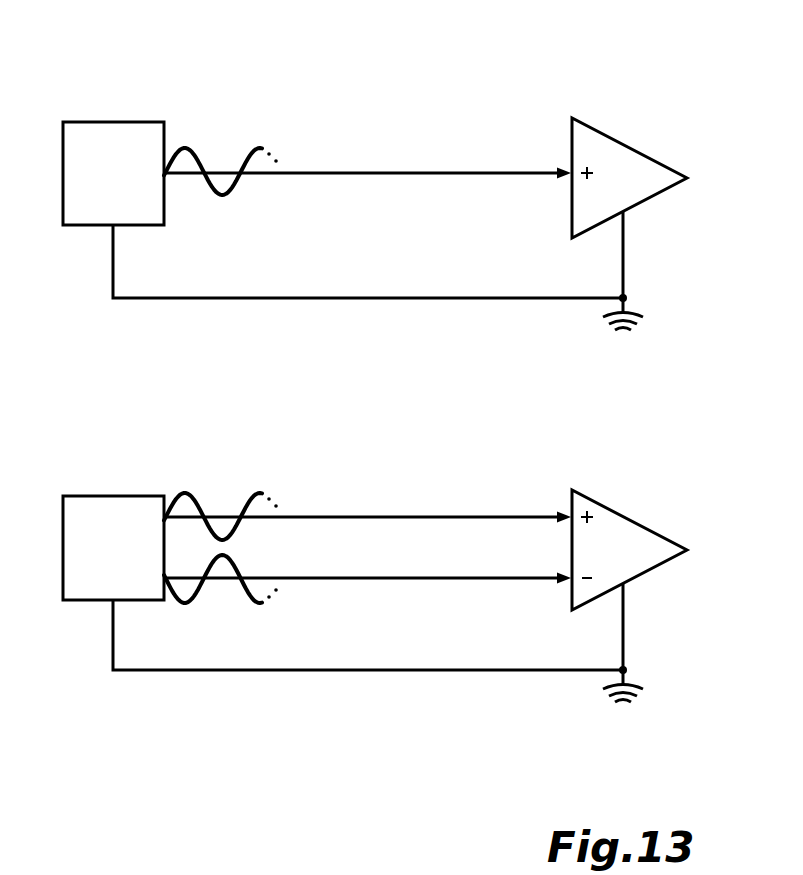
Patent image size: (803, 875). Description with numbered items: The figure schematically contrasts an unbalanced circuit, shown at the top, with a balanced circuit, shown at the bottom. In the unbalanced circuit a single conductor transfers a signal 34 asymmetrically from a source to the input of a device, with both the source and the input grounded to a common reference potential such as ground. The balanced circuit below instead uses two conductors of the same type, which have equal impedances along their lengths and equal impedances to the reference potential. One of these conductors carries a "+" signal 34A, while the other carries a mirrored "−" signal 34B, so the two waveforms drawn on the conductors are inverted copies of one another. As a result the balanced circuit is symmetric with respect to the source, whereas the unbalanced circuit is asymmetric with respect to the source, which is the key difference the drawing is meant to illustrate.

The signal 34 is at (253, 148).
The "+" signal 34A is at (252, 493).
The "−" signal 34B is at (247, 593).